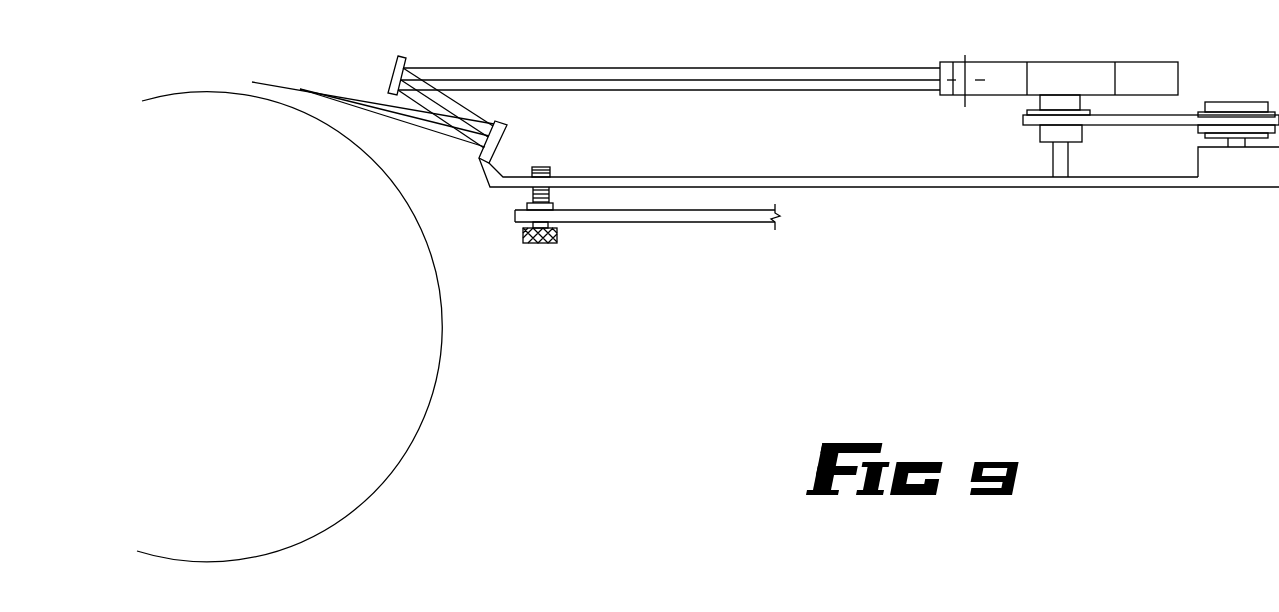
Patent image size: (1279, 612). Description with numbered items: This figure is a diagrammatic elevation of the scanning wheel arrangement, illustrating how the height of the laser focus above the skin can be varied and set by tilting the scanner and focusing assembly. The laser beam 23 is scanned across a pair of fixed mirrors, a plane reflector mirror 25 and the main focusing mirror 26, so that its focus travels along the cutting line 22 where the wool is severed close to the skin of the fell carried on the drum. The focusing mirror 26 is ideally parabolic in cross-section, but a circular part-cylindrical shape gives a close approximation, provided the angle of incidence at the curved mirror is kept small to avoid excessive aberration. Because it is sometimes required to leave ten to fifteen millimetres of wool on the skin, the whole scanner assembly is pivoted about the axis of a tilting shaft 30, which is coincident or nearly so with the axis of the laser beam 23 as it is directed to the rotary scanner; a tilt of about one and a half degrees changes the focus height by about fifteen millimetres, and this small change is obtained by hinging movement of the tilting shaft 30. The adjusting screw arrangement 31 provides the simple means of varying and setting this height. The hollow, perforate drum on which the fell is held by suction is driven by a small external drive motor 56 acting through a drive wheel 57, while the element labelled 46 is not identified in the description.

The cutting line 22 is at (302, 84).
The laser beam 23 is at (340, 90).
The mirror 25 is at (400, 57).
The mirror 26 is at (508, 131).
The tilting shaft 30 is at (966, 79).
The adjusting screw arrangement 31 is at (558, 242).
The drum 46 is at (442, 340).
The drive motor 56 is at (1225, 178).
The drive wheel 57 is at (1102, 122).